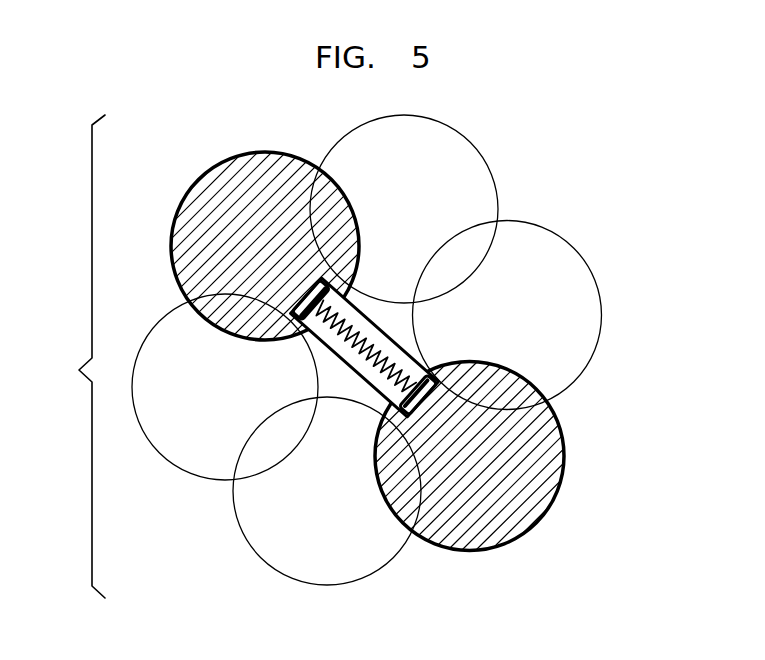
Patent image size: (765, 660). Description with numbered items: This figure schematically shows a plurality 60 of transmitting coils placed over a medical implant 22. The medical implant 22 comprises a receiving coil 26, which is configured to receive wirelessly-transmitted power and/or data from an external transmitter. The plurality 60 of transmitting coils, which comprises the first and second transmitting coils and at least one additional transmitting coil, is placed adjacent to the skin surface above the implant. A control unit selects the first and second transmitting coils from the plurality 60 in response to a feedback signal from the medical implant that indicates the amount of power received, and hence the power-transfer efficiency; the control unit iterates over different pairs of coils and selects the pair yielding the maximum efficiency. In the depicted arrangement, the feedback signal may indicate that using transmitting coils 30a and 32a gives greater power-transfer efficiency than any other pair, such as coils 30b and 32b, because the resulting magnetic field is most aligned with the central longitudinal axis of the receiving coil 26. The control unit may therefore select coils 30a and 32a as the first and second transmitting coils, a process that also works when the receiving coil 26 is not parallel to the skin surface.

The medical implant 22 is at (346, 360).
The receiving coil 26 is at (408, 352).
The transmitting coil 30a is at (185, 196).
The transmitting coil 30b is at (338, 148).
The transmitting coil 32a is at (537, 520).
The transmitting coil 32b is at (262, 556).
The plurality of transmitting coils 60 is at (77, 356).